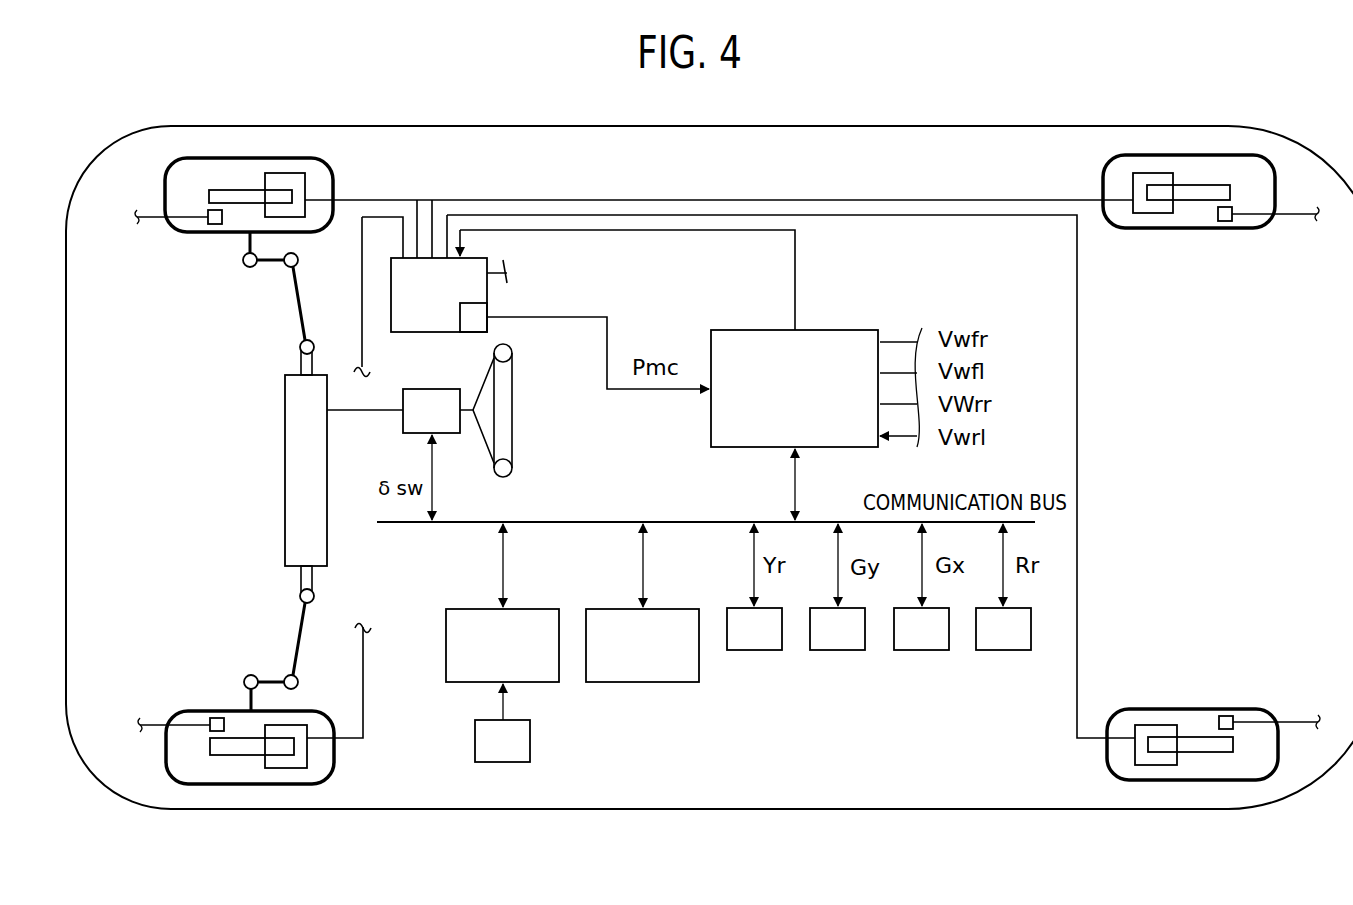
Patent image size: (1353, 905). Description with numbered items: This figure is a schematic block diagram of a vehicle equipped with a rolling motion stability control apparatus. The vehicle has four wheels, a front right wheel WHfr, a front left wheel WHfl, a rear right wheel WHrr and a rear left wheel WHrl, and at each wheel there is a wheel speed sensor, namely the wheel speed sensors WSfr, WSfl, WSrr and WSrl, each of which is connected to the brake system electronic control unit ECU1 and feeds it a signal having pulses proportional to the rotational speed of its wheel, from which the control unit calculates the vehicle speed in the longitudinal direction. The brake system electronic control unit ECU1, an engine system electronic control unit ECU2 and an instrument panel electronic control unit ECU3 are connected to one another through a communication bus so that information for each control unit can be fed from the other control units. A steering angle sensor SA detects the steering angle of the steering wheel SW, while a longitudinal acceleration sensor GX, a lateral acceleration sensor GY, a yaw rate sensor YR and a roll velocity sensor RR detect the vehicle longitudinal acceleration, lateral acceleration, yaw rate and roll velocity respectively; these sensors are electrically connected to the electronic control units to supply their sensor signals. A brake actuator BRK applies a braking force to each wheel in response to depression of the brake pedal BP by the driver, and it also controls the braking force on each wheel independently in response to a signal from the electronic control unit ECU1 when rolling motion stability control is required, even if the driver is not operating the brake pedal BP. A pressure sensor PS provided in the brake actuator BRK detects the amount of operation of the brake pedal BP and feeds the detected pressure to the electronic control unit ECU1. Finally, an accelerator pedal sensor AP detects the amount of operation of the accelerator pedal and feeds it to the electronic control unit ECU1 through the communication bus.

The front right wheel WHfr is at (249, 182).
The front left wheel WHfl is at (250, 762).
The rear right wheel WHrr is at (1189, 180).
The rear left wheel WHrl is at (1192, 758).
The front right wheel speed sensor WSfr is at (219, 228).
The front left wheel speed sensor WSfl is at (222, 690).
The rear right wheel speed sensor WSrr is at (1224, 221).
The rear left wheel speed sensor WSrl is at (1224, 716).
The brake actuator BRK is at (439, 295).
The brake pedal BP is at (531, 305).
The pressure sensor PS is at (475, 333).
The steering angle sensor SA is at (351, 471).
The steering wheel SW is at (512, 428).
The brake system electronic control unit ECU1 is at (794, 388).
The engine system electronic control unit ECU2 is at (502, 645).
The instrument panel electronic control unit ECU3 is at (642, 645).
The accelerator pedal sensor AP is at (502, 723).
The yaw rate sensor YR is at (754, 629).
The lateral acceleration sensor GY is at (837, 629).
The longitudinal acceleration sensor GX is at (921, 629).
The roll velocity sensor RR is at (1003, 629).